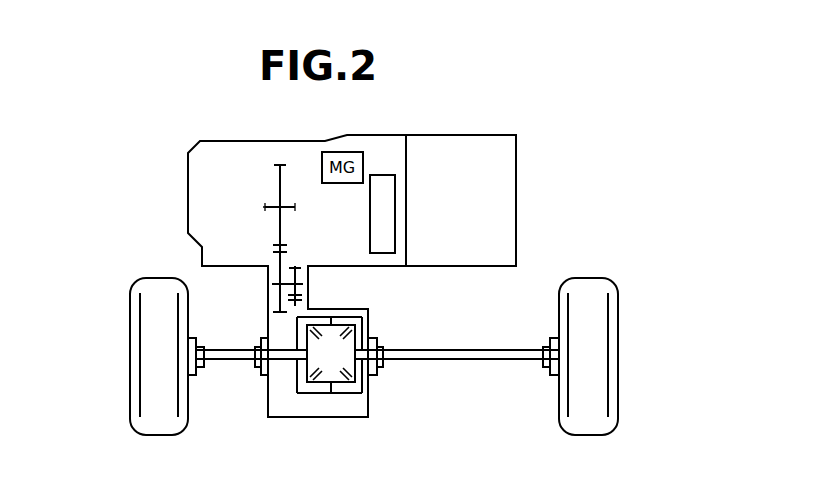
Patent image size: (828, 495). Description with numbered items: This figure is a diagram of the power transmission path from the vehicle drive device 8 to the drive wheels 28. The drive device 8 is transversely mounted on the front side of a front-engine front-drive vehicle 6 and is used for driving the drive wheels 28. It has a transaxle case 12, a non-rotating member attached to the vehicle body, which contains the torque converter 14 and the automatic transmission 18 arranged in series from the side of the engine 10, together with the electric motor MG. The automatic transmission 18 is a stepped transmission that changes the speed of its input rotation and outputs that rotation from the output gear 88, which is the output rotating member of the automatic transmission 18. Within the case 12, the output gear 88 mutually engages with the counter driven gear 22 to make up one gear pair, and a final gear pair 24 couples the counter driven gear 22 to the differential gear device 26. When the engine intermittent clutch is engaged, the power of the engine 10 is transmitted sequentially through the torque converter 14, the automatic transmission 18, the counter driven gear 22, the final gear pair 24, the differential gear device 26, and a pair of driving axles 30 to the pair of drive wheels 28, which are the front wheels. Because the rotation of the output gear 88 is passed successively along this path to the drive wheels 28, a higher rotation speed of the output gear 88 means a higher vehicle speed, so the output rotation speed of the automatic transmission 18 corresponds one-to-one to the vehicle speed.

The vehicle 6 is at (643, 57).
The vehicle drive device 8 is at (513, 117).
The engine 10 is at (440, 258).
The transaxle case 12 is at (308, 140).
The torque converter 14 is at (379, 255).
The automatic transmission 18 is at (202, 152).
The counter driven gear 22 is at (276, 297).
The final gear pair 24 is at (320, 304).
The differential gear device 26 is at (353, 407).
The drive wheels 28 is at (160, 286).
The driving axles 30 is at (219, 361).
The output gear 88 is at (278, 165).